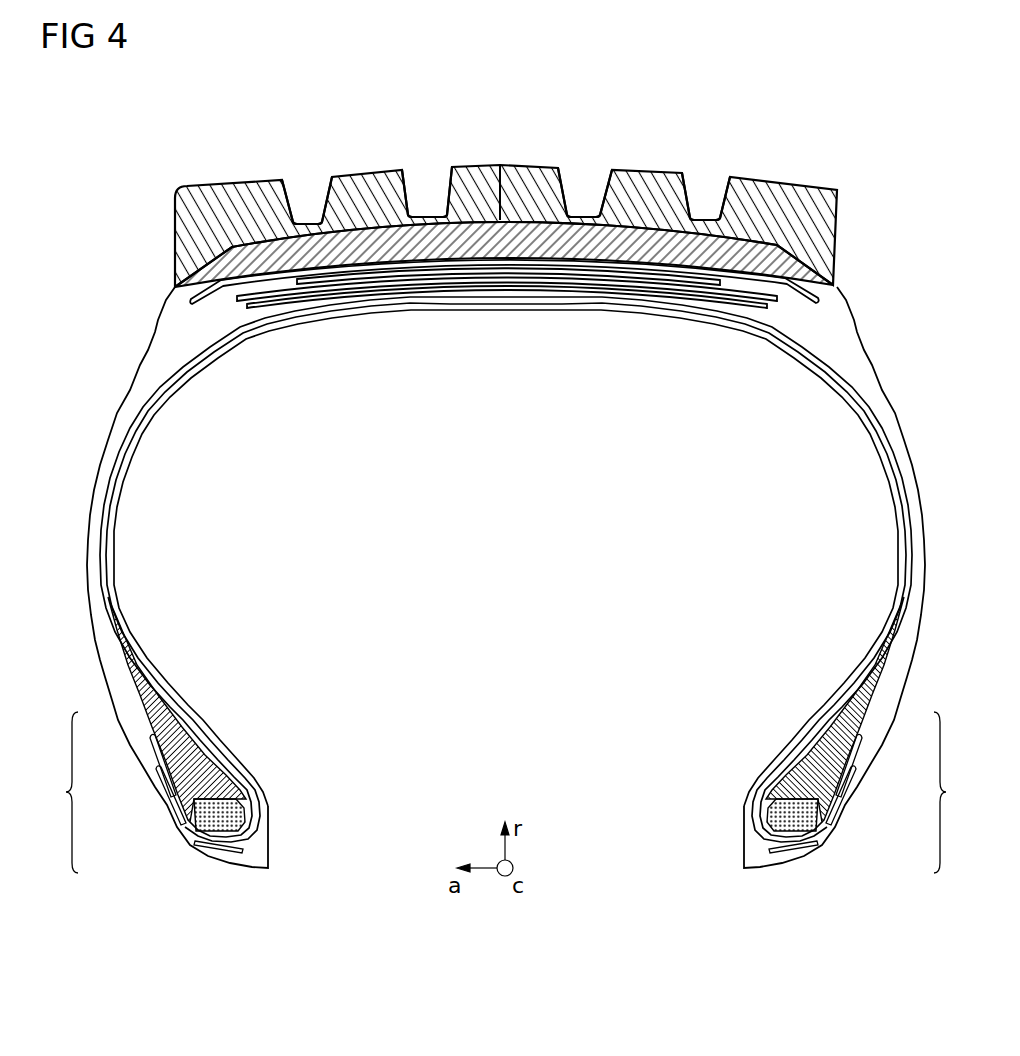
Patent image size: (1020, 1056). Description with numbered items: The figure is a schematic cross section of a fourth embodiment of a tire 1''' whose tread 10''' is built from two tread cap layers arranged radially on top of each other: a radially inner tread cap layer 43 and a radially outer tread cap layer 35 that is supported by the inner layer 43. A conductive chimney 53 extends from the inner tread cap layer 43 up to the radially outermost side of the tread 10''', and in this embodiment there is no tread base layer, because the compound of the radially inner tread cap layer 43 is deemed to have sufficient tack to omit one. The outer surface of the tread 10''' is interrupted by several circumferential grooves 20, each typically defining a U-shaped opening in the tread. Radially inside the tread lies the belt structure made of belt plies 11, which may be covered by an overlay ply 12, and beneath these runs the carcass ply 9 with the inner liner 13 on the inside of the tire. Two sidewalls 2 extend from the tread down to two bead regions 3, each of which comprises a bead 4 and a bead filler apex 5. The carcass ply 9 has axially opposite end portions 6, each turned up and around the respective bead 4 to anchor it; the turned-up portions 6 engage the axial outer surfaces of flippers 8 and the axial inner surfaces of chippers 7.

The tire 1''' is at (505, 494).
The tread 10''' is at (501, 234).
The sidewall 2 is at (113, 418).
The bead region 3 is at (505, 792).
The bead 4 is at (232, 807).
The bead filler apex 5 is at (186, 716).
The axial end portion of the carcass ply 6 is at (150, 742).
The chipper 7 is at (158, 770).
The flipper 8 is at (184, 818).
The carcass ply 9 is at (240, 332).
The belt ply 11 is at (622, 290).
The overlay ply 12 is at (818, 297).
The inner liner 13 is at (200, 371).
The circumferential groove 20 is at (306, 216).
The radially outer tread cap layer 35 is at (840, 205).
The radially inner tread cap layer 43 is at (843, 268).
The conductive chimney 53 is at (500, 167).